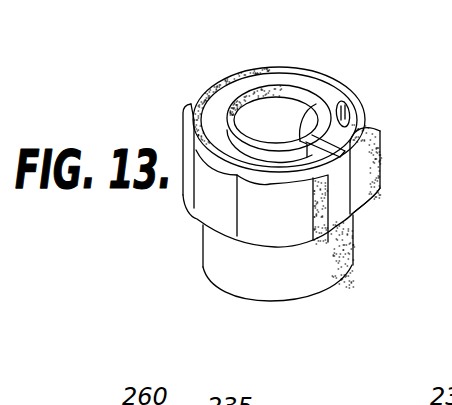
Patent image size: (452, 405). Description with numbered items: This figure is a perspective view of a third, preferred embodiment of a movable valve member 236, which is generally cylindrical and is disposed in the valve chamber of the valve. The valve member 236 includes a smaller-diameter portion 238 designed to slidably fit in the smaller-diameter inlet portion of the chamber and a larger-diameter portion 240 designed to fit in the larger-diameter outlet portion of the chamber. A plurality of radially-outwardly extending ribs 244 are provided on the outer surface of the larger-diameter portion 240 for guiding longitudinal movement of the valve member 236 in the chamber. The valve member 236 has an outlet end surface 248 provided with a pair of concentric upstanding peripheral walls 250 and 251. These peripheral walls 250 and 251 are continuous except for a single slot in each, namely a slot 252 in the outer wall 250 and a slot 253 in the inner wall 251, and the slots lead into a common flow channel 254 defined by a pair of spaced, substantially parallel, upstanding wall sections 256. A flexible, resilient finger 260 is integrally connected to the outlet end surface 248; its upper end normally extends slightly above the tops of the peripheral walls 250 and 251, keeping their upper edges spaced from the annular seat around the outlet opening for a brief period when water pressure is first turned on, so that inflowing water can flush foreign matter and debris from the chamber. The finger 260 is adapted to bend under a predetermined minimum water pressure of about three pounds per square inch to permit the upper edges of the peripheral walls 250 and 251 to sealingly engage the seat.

The valve member 236 is at (176, 109).
The smaller-diameter portion 238 is at (220, 266).
The larger-diameter portion 240 is at (353, 216).
The ribs 244 is at (195, 158).
The outlet end surface 248 is at (222, 100).
The outer peripheral wall 250 is at (297, 68).
The inner peripheral wall 251 is at (262, 88).
The slot in outer wall 252 is at (368, 181).
The slot in inner wall 253 is at (305, 127).
The flow channel 254 is at (318, 136).
The upstanding wall sections 256 is at (276, 218).
The resilient finger 260 is at (349, 104).